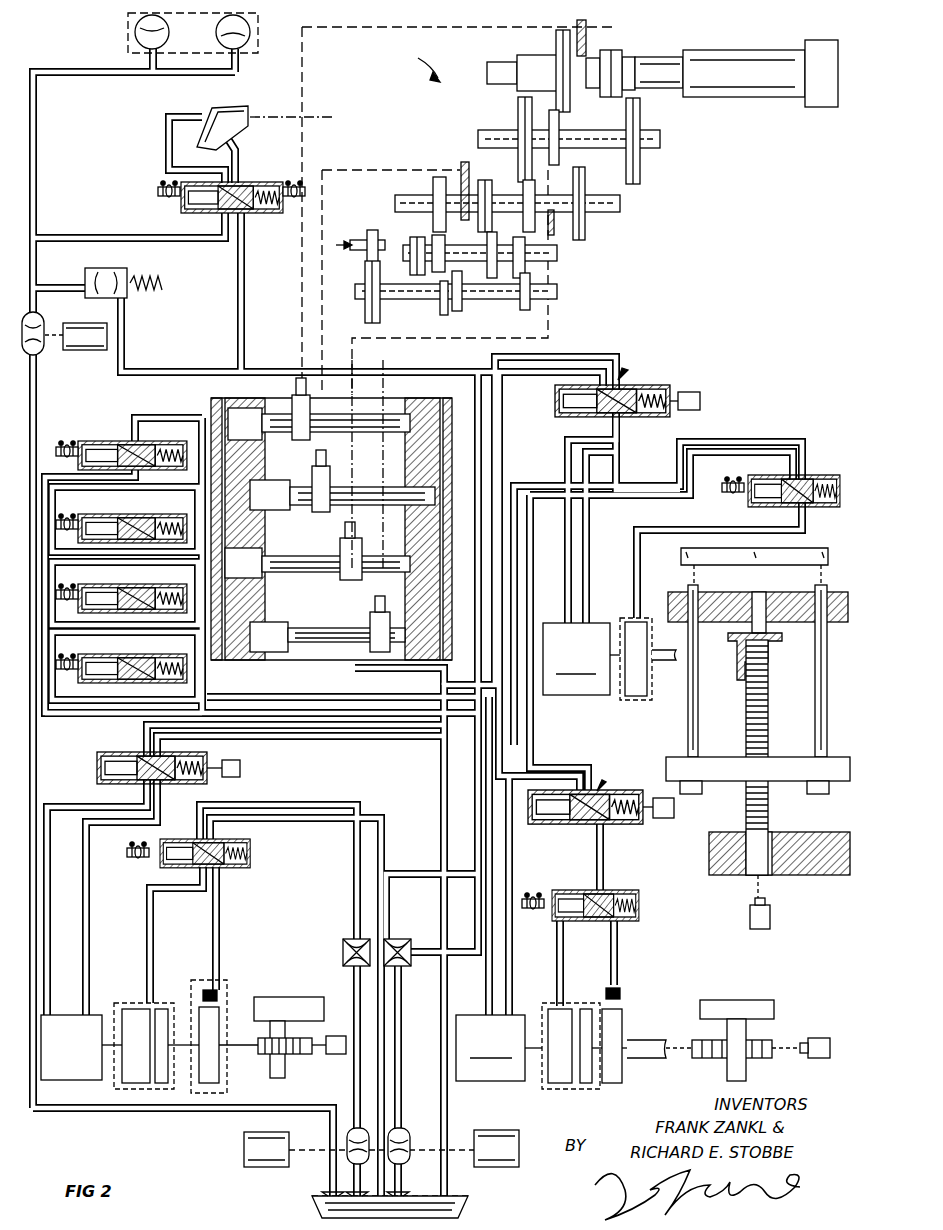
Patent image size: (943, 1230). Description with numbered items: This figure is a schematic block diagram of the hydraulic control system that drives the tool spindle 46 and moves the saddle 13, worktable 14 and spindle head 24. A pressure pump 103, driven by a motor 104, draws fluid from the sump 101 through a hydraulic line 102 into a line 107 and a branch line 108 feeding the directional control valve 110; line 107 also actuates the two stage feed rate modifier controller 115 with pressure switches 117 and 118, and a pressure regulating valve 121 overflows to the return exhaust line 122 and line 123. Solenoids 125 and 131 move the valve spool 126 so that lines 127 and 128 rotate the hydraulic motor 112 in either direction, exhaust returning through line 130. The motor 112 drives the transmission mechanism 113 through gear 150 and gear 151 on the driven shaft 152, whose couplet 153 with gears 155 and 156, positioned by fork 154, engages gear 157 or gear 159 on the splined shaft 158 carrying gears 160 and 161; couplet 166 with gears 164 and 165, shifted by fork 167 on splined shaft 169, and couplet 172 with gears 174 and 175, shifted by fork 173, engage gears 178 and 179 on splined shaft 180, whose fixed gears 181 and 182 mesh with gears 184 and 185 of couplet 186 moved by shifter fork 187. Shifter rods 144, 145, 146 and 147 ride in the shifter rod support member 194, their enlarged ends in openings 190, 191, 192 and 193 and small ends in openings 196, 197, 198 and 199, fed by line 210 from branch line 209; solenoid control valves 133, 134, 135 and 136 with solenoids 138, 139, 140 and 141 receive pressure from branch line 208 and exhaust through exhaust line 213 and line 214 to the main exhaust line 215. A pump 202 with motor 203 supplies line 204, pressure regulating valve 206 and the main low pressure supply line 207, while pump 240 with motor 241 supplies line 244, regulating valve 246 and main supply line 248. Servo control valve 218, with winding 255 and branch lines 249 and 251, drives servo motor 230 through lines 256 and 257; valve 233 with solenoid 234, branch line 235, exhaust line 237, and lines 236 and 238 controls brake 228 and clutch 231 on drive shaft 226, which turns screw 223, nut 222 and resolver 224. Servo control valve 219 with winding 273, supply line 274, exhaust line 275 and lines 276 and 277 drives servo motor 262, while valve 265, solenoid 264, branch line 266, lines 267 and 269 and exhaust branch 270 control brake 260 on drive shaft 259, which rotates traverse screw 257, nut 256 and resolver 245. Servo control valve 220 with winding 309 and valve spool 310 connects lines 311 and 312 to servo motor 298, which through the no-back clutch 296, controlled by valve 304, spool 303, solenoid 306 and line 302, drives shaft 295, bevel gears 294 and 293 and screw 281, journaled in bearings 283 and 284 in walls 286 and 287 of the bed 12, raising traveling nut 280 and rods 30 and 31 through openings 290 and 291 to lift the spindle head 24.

The base or bed 12 is at (836, 624).
The saddle 13 is at (292, 997).
The worktable 14 is at (750, 1000).
The spindle head 24 is at (800, 552).
The circular rod 30 is at (690, 720).
The circular rod 31 is at (816, 688).
The tool spindle 46 is at (812, 107).
The sump 101 is at (322, 1200).
The hydraulic line 102 is at (100, 1110).
The pressure pump 103 is at (36, 355).
The motor 104 is at (70, 323).
The hydraulic line 107 is at (37, 125).
The branch line 108 is at (190, 240).
The directional control valve 110 is at (205, 216).
The hydraulic motor 112 is at (238, 108).
The shiftably geared transmission mechanism 113 is at (457, 211).
The two stage feed rate modifier controller 115 is at (126, 33).
The pressure actuated switch 117 is at (160, 25).
The pressure actuated switch 118 is at (244, 37).
The pressure regulating valve 121 is at (115, 270).
The return exhaust line 122 is at (145, 370).
The return line 123 is at (483, 444).
The solenoid 125 is at (160, 186).
The valve spool 126 is at (258, 214).
The line 127 is at (167, 117).
The conduit 128 is at (240, 162).
The exhaust line 130 is at (245, 255).
The solenoid 131 is at (298, 182).
The solenoid control valve 133 is at (100, 683).
The solenoid control valve 134 is at (125, 615).
The solenoid control valve 135 is at (125, 545).
The solenoid control valve 136 is at (90, 441).
The solenoid 138 is at (78, 640).
The solenoid 139 is at (80, 568).
The solenoid 140 is at (70, 512).
The solenoid 141 is at (60, 440).
The shifter rod 144 is at (270, 655).
The shifter rod 145 is at (342, 545).
The shifter rod 146 is at (345, 496).
The shifter rod 147 is at (275, 415).
The gear 150 is at (362, 250).
The gear 151 is at (380, 305).
The splined driven shaft 152 is at (558, 292).
The shiftable gear couplet 153 is at (463, 300).
The shifting fork 154 is at (372, 618).
The couplet gear 155 is at (446, 312).
The gear 156 is at (525, 312).
The gear 157 is at (527, 262).
The splined shaft 158 is at (374, 232).
The non-shiftable gear 159 is at (436, 236).
The non-shiftable gear 160 is at (487, 240).
The non-shiftable gear 161 is at (410, 268).
The gear 164 is at (482, 182).
The gear 165 is at (433, 185).
The unitary gear couplet 166 is at (462, 170).
The shifting fork 167 is at (316, 474).
The splined shaft 169 is at (618, 206).
The axially shiftable gear couplet 172 is at (540, 236).
The shifting fork 173 is at (345, 530).
The gear 174 is at (535, 190).
The gear 175 is at (556, 222).
The non-shiftable gear 178 is at (518, 105).
The non-shiftable gear 179 is at (586, 180).
The splined shaft 180 is at (661, 138).
The fixed gear 181 is at (554, 112).
The fixed gear 182 is at (641, 166).
The gear 184 is at (556, 45).
The gear 185 is at (600, 55).
The gear couplet 186 is at (606, 50).
The shifter fork 187 is at (306, 392).
The enlarged cylindrical opening 190 is at (256, 634).
The enlarged cylindrical opening 191 is at (260, 556).
The enlarged cylindrical opening 192 is at (258, 497).
The enlarged cylindrical opening 193 is at (228, 416).
The shifter rod support member 194 is at (395, 400).
The small diameter cylindrical opening 196 is at (410, 660).
The small diameter cylindrical opening 197 is at (410, 575).
The small diameter cylindrical opening 198 is at (410, 508).
The small diameter cylindrical opening 199 is at (420, 415).
The pump 202 is at (346, 1135).
The motor 203 is at (246, 1134).
The pressure supply line 204 is at (354, 1085).
The pressure regulating valve 206 is at (343, 945).
The main low pressure hydraulic supply line 207 is at (775, 453).
The branch line 208 is at (120, 713).
The branch line 209 is at (353, 670).
The line 210 is at (438, 655).
The exhaust line 213 is at (205, 670).
The line 214 is at (240, 697).
The main exhaust line 215 is at (700, 443).
The servo control valve 218 is at (205, 748).
The servo control valve 219 is at (607, 782).
The servo control valve 220 is at (630, 374).
The depending nut 222 is at (275, 1078).
The rotatable screw 223 is at (270, 1056).
The position indicating resolver 224 is at (332, 1036).
The drive shaft 226 is at (265, 1038).
The brake 228 is at (205, 985).
The servo drive motor 230 is at (48, 1072).
The clutch 231 is at (136, 1000).
The valve 233 is at (188, 838).
The solenoid 234 is at (130, 845).
The branch line 235 is at (265, 822).
The line 236 is at (220, 910).
The branch exhaust line 237 is at (250, 805).
The line 238 is at (148, 915).
The pump 240 is at (405, 1132).
The motor 241 is at (520, 1142).
The supply line 244 is at (400, 990).
The positioning resolver 245 is at (814, 1058).
The pressure regulating valve 246 is at (411, 947).
The main supply line 248 is at (600, 357).
The branch line 249 is at (340, 740).
The branch line 251 is at (282, 728).
The servo winding 255 is at (240, 768).
The line 256 is at (89, 873).
The return line 257 is at (72, 795).
The drive shaft 259 is at (645, 1040).
The brake 260 is at (630, 1005).
The servo drive motor 262 is at (500, 1083).
The solenoid 264 is at (534, 910).
The valve 265 is at (640, 915).
The branch line 266 is at (604, 870).
The line 267 is at (618, 960).
The line 269 is at (558, 960).
The branch line 270 is at (388, 878).
The servo winding 273 is at (664, 818).
The pressure supply line 274 is at (572, 770).
The exhaust line 275 is at (560, 775).
The supply line 276 is at (512, 980).
The supply line 277 is at (486, 995).
The traveling nut member 280 is at (790, 770).
The rotatable screw member 281 is at (746, 731).
The bearing 283 is at (770, 598).
The bearing 284 is at (780, 860).
The non-movable wall 286 is at (686, 598).
The non-movable wall 287 is at (715, 868).
The bored opening 290 is at (716, 600).
The bored opening 291 is at (826, 592).
The bevel gear 293 is at (772, 640).
The bevel gear 294 is at (738, 672).
The rotatable shaft 295 is at (665, 650).
The no-back clutch 296 is at (630, 616).
The servo drive motor 298 is at (581, 659).
The hydraulic supply line 302 is at (636, 530).
The valve spool 303 is at (775, 505).
The valve 304 is at (795, 474).
The solenoid 306 is at (730, 496).
The winding 309 is at (700, 399).
The valve spool 310 is at (594, 415).
The supply line 311 is at (589, 468).
The supply line 312 is at (566, 452).